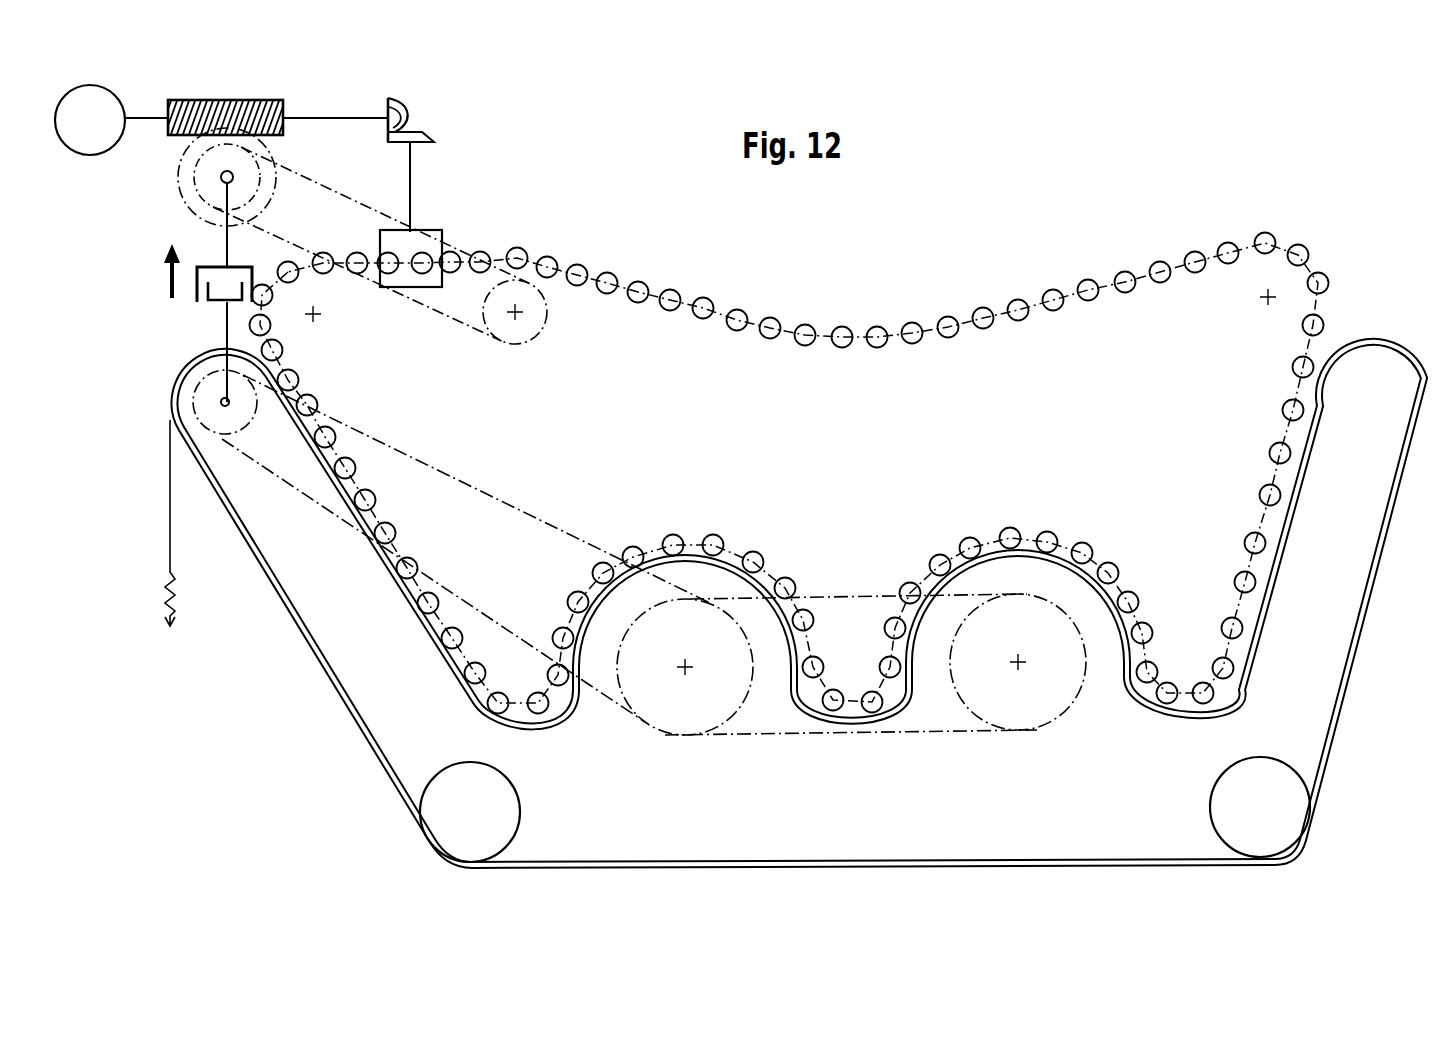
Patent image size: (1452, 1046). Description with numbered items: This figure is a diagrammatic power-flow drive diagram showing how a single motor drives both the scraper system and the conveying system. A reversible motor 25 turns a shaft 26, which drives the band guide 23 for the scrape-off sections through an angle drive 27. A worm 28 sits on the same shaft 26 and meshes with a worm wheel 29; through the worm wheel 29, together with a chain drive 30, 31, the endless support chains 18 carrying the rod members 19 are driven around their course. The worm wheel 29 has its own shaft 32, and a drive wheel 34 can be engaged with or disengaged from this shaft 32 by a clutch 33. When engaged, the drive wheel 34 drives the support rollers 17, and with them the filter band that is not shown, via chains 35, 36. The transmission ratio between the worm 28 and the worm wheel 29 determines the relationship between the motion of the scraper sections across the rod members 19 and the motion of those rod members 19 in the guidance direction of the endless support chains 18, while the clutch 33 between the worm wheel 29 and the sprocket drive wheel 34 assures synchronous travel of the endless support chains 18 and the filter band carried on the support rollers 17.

The support roller 17 is at (671, 707).
The endless support chain 18 is at (683, 305).
The rod member 19 is at (807, 323).
The band guide 23 is at (410, 240).
The reversible motor 25 is at (90, 143).
The shaft 26 is at (317, 112).
The angle drive 27 is at (412, 120).
The worm 28 is at (208, 102).
The worm wheel 29 is at (183, 192).
The chain drive 30 is at (322, 182).
The chain drive 31 is at (533, 327).
The shaft 32 is at (222, 238).
The clutch 33 is at (197, 303).
The drive wheel 34 is at (195, 397).
The chain 35 is at (497, 477).
The chain 36 is at (835, 596).